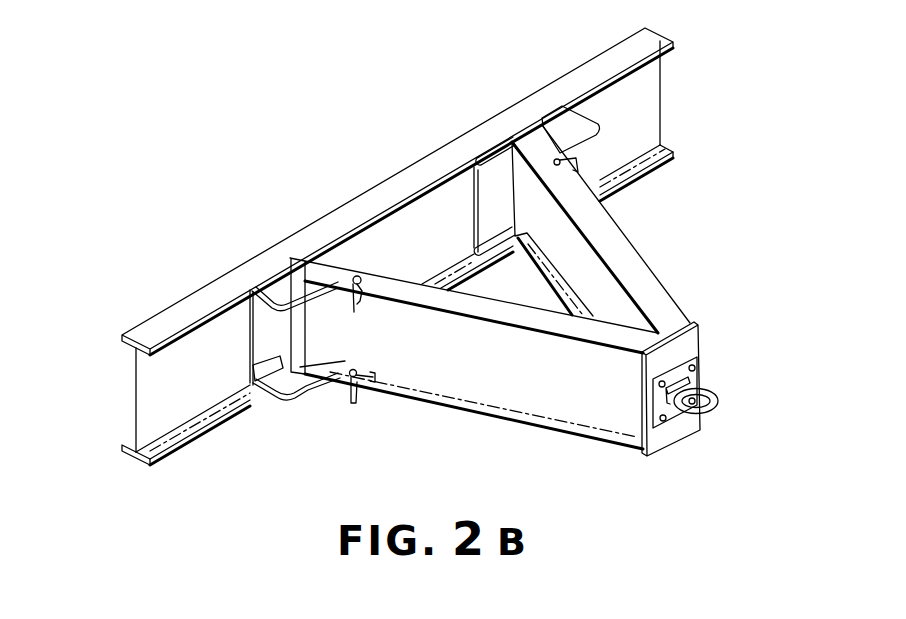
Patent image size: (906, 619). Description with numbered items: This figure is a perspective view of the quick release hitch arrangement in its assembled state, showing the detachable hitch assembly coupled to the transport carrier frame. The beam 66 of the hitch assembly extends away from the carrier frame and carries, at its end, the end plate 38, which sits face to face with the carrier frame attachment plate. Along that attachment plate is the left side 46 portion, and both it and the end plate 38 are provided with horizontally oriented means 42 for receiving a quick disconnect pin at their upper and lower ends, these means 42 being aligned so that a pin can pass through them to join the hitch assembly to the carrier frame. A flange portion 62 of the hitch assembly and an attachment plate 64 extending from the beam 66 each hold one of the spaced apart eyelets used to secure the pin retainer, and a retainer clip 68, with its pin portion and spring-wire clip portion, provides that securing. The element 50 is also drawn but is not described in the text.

The flange portion 62 is at (663, 45).
The beam 66 is at (560, 384).
The means for receiving a quick disconnect pin 42 is at (478, 245).
The left side portion 46 is at (297, 330).
The end plate 38 is at (302, 395).
The retainer clip 50 is at (270, 376).
The attachment plate 64 is at (375, 335).
The retainer clip 68 is at (601, 157).